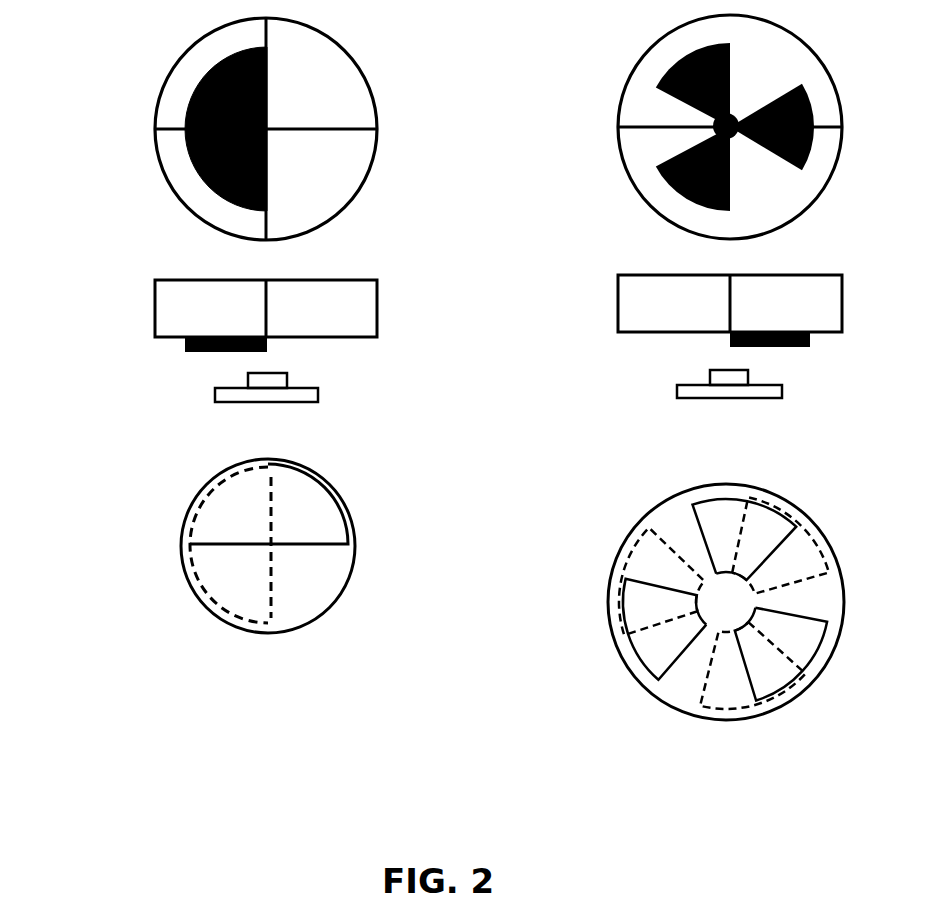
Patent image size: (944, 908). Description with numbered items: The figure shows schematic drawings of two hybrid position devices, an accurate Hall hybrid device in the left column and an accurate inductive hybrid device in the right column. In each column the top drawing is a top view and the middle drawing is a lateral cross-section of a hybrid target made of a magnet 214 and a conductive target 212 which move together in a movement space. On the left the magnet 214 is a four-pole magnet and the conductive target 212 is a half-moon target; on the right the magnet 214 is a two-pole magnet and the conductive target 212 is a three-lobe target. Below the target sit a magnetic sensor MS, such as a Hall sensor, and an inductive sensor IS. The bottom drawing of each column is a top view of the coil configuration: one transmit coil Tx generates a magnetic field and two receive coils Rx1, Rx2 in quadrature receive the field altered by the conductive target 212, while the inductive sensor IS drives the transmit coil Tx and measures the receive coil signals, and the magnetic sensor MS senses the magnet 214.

The magnet 214 is at (163, 85).
The conductive target 212 is at (187, 153).
The magnetic sensor MS is at (285, 378).
The inductive sensor IS is at (318, 397).
The transmit coil Tx is at (640, 685).
The first receive coil Rx1 is at (622, 552).
The second receive coil Rx2 is at (713, 505).